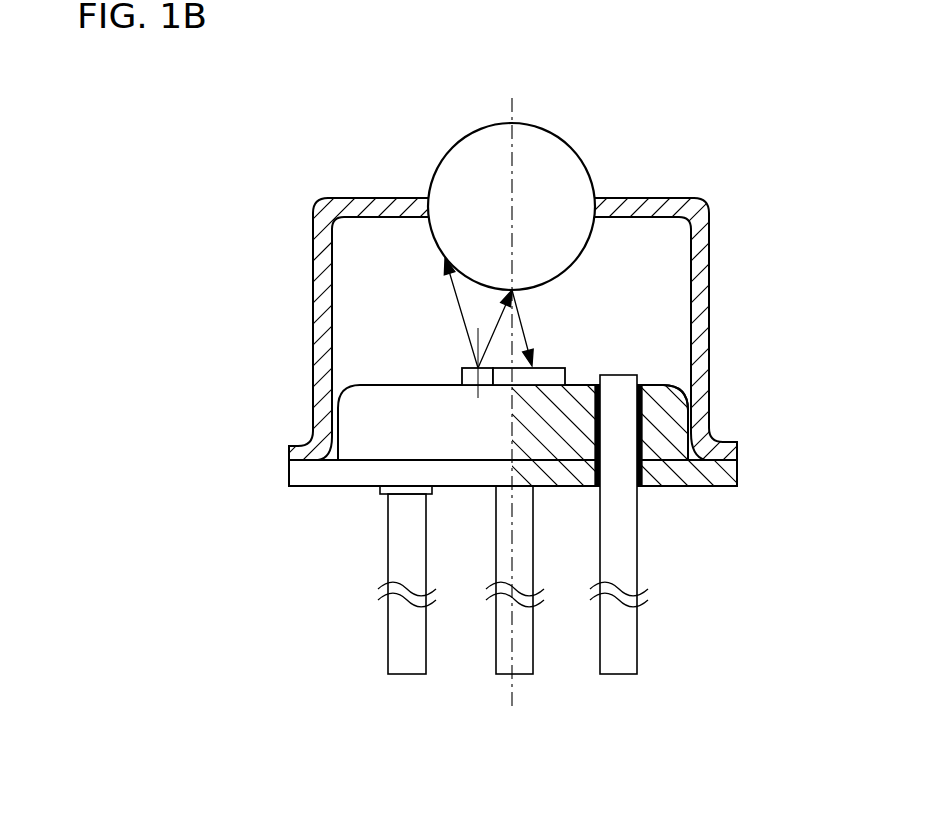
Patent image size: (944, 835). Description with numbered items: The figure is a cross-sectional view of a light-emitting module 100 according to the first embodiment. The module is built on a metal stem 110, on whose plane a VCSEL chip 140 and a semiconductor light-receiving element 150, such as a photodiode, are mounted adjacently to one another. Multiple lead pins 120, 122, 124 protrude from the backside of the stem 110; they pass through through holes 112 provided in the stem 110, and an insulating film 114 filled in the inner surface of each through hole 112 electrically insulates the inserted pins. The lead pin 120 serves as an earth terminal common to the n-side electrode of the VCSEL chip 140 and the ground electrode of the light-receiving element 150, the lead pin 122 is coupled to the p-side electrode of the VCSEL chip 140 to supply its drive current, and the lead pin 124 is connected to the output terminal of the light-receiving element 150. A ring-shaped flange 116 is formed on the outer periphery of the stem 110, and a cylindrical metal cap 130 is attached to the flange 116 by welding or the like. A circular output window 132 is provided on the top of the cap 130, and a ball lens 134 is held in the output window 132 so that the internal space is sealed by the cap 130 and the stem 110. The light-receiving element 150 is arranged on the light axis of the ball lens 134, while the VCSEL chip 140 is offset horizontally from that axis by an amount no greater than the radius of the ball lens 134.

The light-emitting module 100 is at (243, 122).
The metal stem 110 is at (298, 472).
The through hole 112 is at (643, 404).
The insulating film 114 is at (647, 462).
The flange 116 is at (730, 470).
The lead pin 120 is at (405, 674).
The lead pin 122 is at (528, 674).
The lead pin 124 is at (632, 671).
The metal cap 130 is at (710, 262).
The output window 132 is at (597, 195).
The ball lens 134 is at (535, 170).
The VCSEL chip 140 is at (462, 375).
The semiconductor light-receiving element 150 is at (562, 366).